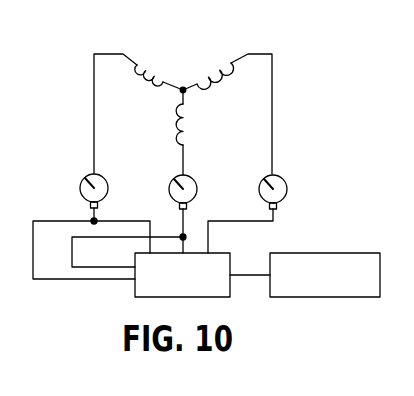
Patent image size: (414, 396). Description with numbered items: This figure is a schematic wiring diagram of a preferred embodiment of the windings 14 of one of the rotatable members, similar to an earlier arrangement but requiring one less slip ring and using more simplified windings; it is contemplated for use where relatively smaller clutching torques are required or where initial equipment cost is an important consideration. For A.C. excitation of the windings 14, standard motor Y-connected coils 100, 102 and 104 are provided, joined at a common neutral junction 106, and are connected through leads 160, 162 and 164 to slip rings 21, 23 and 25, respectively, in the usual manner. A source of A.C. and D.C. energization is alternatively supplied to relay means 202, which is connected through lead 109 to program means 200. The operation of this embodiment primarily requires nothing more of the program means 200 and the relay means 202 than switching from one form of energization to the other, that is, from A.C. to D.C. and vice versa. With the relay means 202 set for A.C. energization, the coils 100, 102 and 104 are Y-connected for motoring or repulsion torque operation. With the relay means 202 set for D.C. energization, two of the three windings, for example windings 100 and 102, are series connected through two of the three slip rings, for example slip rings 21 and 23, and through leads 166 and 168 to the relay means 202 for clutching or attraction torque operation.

The windings 14 is at (181, 107).
The coil 100 is at (173, 55).
The coil 102 is at (155, 132).
The coil 104 is at (222, 54).
The neutral junction 106 is at (180, 91).
The slip ring 21 is at (103, 179).
The slip ring 23 is at (192, 180).
The slip ring 25 is at (266, 180).
The lead 160 is at (98, 205).
The lead 162 is at (188, 205).
The lead 164 is at (278, 206).
The lead 166 is at (63, 216).
The lead 168 is at (116, 264).
The relay means 202 is at (228, 254).
The program means 200 is at (363, 253).
The lead 109 is at (250, 278).